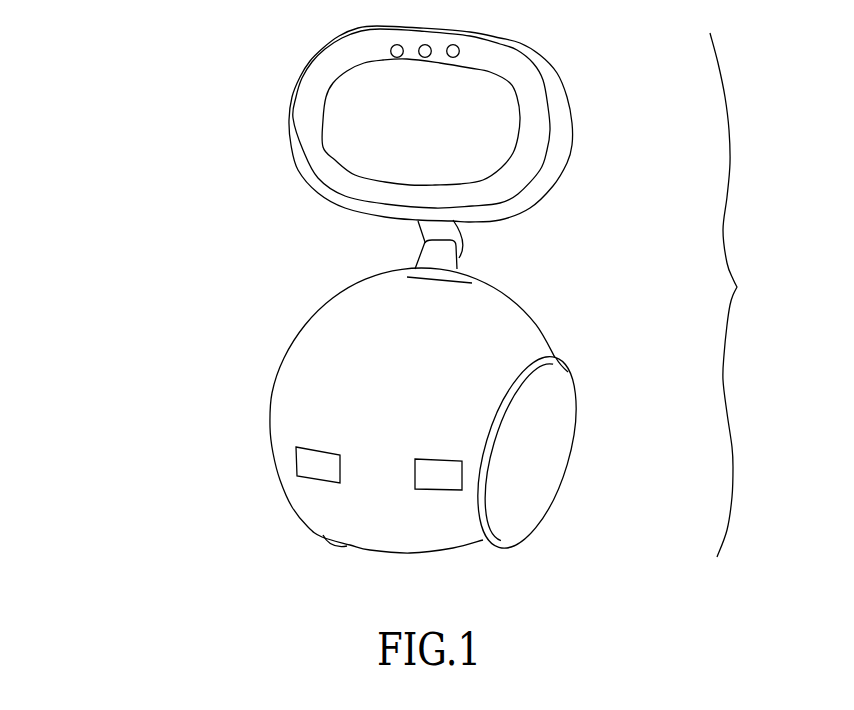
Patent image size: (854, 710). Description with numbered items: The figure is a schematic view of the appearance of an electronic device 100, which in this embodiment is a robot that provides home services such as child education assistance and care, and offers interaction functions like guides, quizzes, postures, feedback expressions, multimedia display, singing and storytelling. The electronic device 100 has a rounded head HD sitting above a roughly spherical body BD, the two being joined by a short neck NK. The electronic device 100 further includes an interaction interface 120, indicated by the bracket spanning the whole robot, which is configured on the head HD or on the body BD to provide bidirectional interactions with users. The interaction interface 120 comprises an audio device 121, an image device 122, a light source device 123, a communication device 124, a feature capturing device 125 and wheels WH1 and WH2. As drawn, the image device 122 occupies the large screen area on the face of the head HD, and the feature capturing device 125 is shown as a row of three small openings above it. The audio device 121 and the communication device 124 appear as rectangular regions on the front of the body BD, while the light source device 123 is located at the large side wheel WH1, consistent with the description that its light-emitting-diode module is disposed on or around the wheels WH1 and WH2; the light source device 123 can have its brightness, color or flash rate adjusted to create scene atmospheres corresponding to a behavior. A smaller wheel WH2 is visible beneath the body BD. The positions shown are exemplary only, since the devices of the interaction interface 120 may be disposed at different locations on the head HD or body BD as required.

The electronic device 100 is at (397, 300).
The interaction interface 120 is at (743, 295).
The audio device 121 is at (452, 468).
The image device 122 is at (519, 136).
The light source device 123 is at (560, 360).
The communication device 124 is at (328, 468).
The feature capturing device 125 is at (463, 57).
The head HD is at (292, 152).
The neck NK is at (418, 248).
The body BD is at (285, 345).
The wheel WH1 is at (542, 392).
The wheel WH2 is at (322, 537).